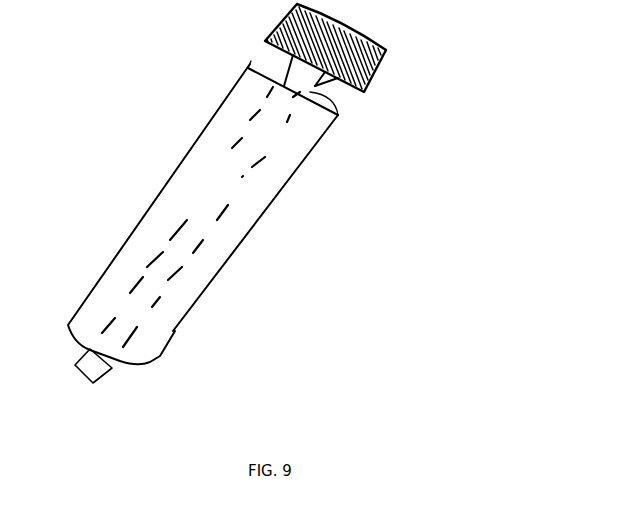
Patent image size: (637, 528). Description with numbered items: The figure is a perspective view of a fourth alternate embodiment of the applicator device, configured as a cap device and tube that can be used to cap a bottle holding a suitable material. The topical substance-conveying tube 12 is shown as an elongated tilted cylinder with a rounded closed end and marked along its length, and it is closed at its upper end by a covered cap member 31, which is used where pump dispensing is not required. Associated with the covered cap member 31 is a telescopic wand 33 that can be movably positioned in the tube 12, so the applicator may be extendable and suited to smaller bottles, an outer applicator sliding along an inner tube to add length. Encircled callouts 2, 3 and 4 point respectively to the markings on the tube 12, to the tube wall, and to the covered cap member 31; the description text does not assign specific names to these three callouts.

The topical substance-conveying tube 12 is at (217, 186).
The covered cap member 31 is at (382, 62).
The telescopic wand 33 is at (338, 78).
The graduation markings 2 is at (186, 261).
The tube wall 3 is at (183, 326).
The cap gripping surface 4 is at (380, 76).